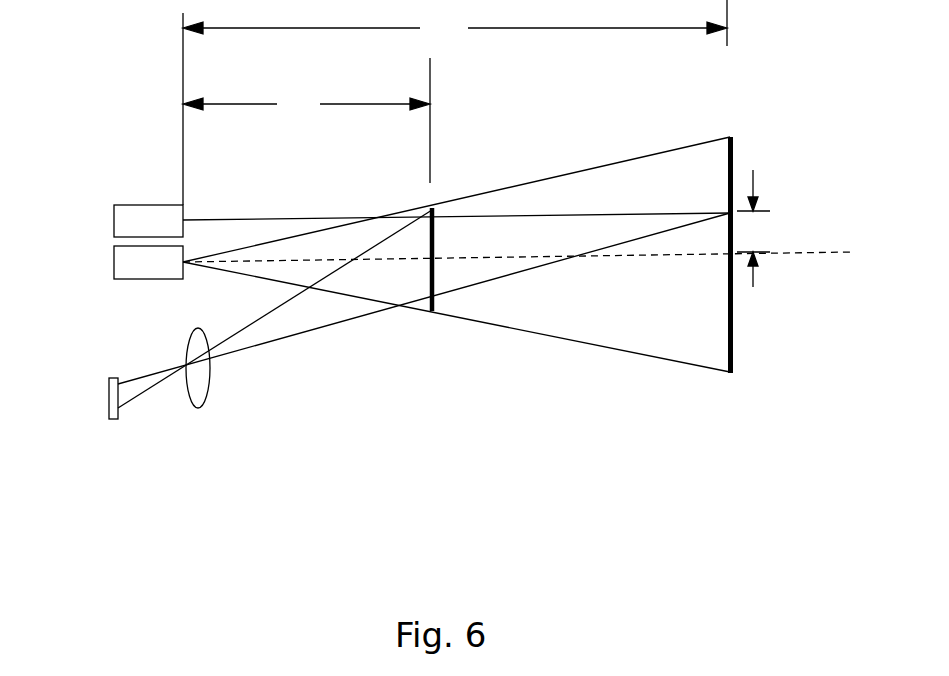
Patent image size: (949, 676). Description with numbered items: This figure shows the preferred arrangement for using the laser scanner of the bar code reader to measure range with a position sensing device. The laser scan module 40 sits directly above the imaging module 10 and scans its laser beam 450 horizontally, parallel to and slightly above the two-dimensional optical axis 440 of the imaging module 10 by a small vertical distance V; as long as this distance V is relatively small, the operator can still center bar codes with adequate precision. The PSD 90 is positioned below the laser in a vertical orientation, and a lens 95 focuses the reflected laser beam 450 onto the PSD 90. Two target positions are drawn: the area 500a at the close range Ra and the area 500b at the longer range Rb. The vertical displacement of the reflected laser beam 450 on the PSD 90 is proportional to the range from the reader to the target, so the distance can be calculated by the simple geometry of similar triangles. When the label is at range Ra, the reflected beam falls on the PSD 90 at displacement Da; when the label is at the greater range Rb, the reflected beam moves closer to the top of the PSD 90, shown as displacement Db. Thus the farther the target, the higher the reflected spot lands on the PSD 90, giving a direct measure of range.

The imaging module 10 is at (113, 264).
The laser scan module 40 is at (113, 221).
The PSD 90 is at (109, 392).
The lens 95 is at (208, 398).
The optical axis 440 is at (775, 251).
The laser beam 450 is at (338, 215).
The area 500a is at (438, 245).
The area 500b is at (733, 170).
The displacement Da is at (121, 412).
The displacement Db is at (122, 384).
The close range Ra is at (306, 120).
The longer range Rb is at (455, 23).
The distance V is at (753, 228).